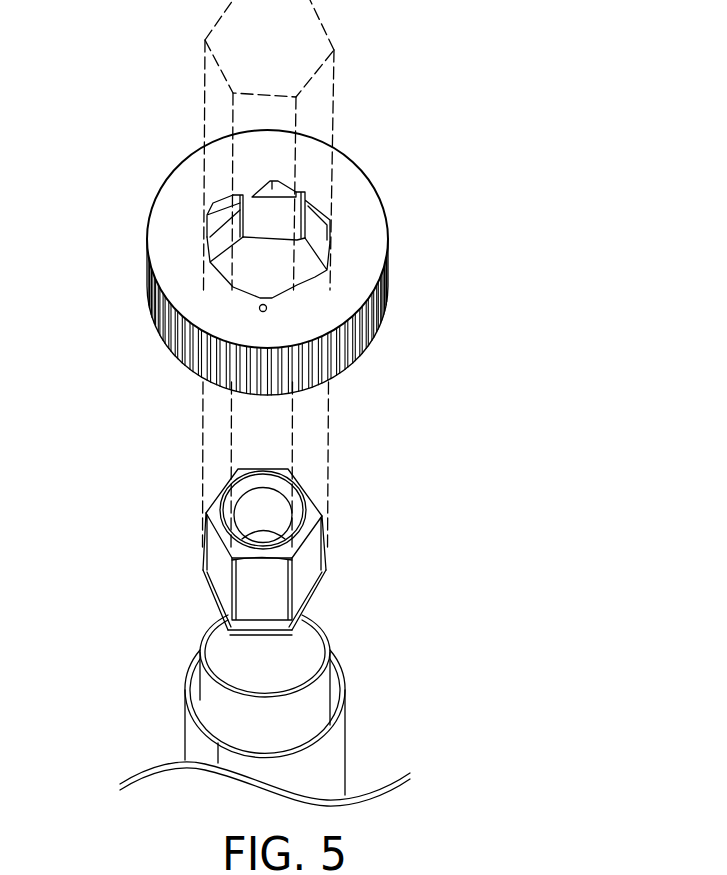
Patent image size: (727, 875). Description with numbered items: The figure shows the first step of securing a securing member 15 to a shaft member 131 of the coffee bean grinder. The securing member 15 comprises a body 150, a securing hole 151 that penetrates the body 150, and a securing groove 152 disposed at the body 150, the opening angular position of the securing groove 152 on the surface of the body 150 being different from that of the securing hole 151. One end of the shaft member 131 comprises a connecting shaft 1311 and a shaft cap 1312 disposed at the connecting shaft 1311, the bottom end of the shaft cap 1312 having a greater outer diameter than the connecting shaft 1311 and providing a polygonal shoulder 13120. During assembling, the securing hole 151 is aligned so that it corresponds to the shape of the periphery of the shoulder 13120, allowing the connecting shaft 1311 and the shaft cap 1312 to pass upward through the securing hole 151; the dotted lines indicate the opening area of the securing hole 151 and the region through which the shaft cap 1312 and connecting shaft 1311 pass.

The securing member 15 is at (118, 213).
The body 150 is at (300, 318).
The securing hole 151 is at (214, 286).
The securing groove 152 is at (253, 189).
The shaft member 131 is at (492, 590).
The shaft cap 1312 is at (305, 572).
The shoulder 13120 is at (203, 588).
The connecting shaft 1311 is at (283, 650).